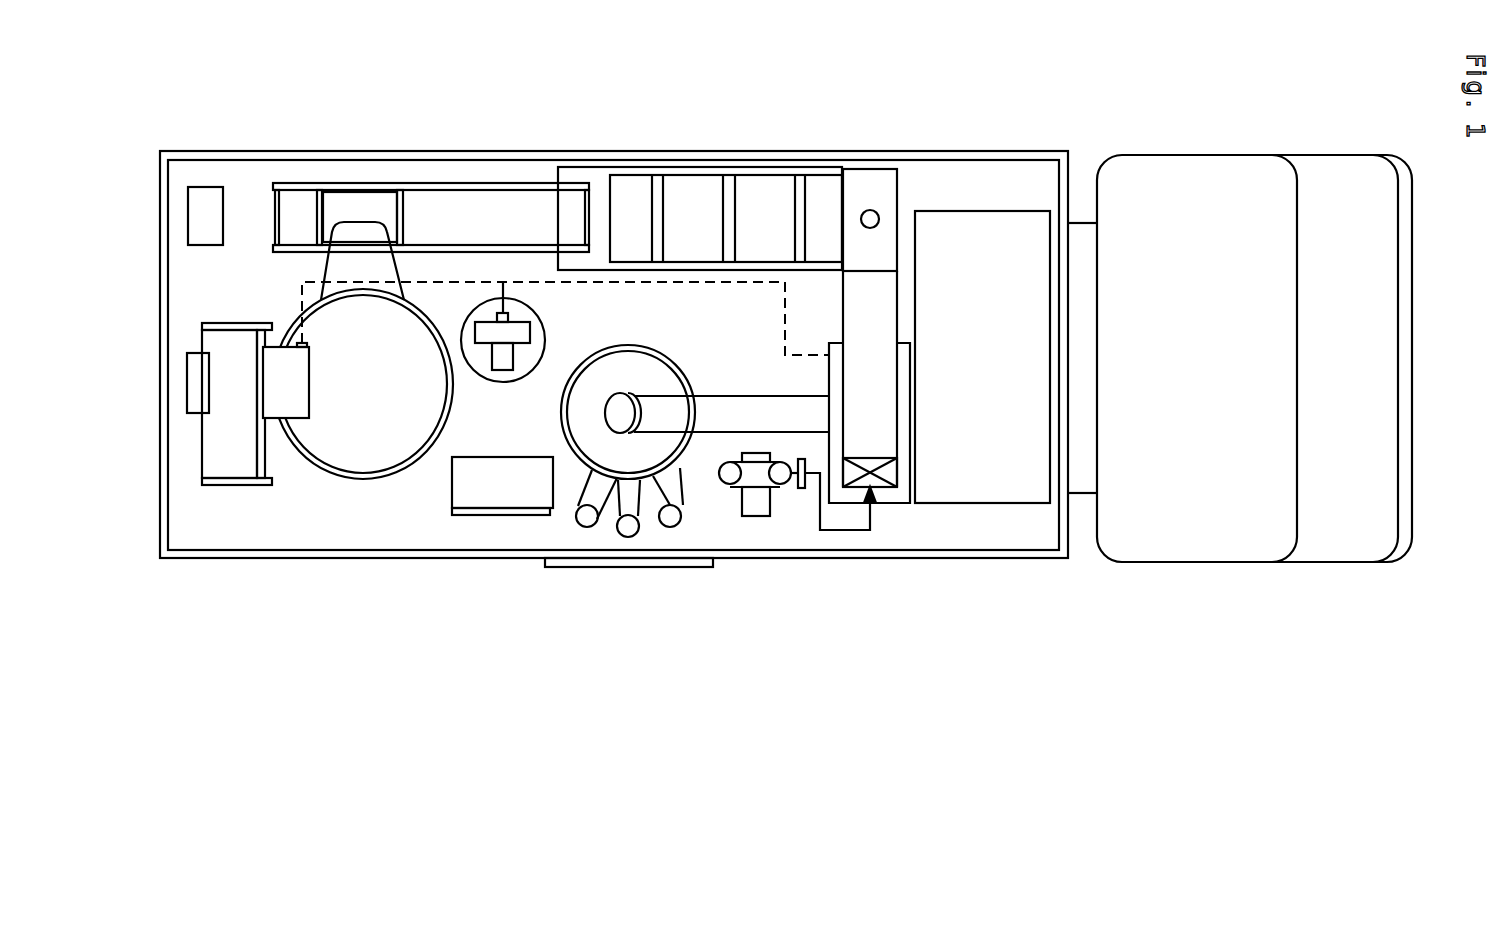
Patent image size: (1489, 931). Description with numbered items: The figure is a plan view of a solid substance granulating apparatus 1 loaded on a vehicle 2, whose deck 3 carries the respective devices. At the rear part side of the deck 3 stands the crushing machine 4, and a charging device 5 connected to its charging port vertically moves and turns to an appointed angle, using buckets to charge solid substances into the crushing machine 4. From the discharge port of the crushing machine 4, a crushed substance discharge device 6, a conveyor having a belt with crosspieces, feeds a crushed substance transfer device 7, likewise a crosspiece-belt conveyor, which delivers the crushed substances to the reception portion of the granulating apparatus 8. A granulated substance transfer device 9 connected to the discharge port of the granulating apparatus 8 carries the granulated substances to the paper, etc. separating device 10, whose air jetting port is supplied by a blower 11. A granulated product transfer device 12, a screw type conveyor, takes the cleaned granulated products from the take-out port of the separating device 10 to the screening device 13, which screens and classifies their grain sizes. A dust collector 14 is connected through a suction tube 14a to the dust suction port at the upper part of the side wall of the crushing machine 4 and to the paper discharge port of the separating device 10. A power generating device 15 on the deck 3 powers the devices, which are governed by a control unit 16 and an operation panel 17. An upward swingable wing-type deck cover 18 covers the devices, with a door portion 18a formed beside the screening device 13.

The solid substance granulating apparatus loaded on a vehicle 1 is at (1132, 76).
The vehicle 2 is at (1205, 183).
The deck 3 is at (983, 530).
The crushing machine 4 is at (352, 427).
The charging device 5 is at (222, 438).
The crushed substance discharge device 6 is at (353, 247).
The crushed substance transfer device 7 is at (486, 212).
The granulating apparatus 8 is at (700, 203).
The granulated substance transfer device 9 is at (868, 188).
The paper, etc. separating device 10 is at (890, 497).
The blower 11 is at (762, 502).
The granulated product transfer device 12 is at (700, 420).
The screening device 13 is at (630, 527).
The dust collector 14 is at (503, 360).
The suction tube 14a is at (700, 283).
The power generating device 15 is at (955, 250).
The control unit 16 is at (497, 498).
The operation panel 17 is at (201, 207).
The deck cover 18 is at (232, 557).
The door portion 18a is at (643, 563).